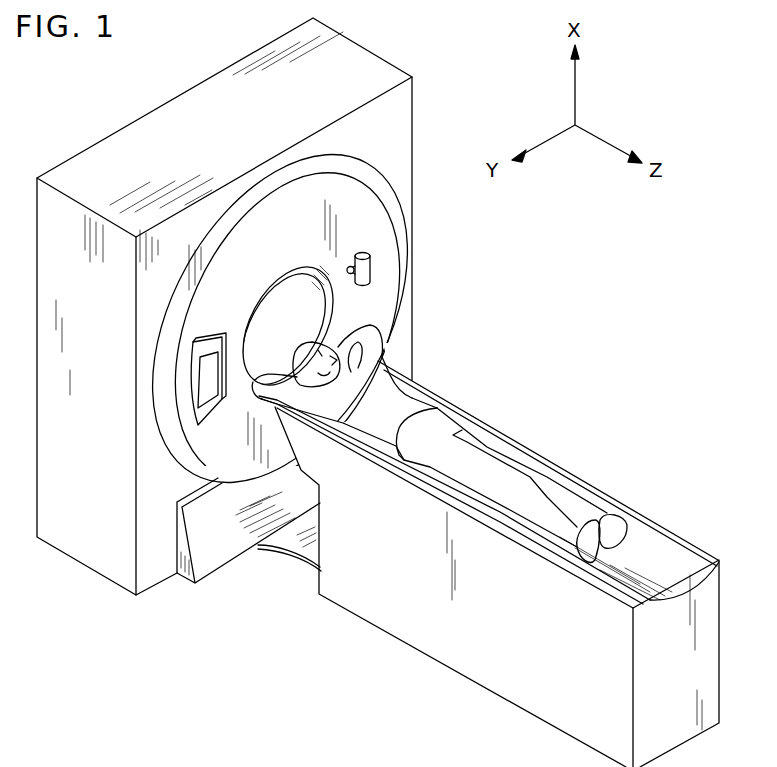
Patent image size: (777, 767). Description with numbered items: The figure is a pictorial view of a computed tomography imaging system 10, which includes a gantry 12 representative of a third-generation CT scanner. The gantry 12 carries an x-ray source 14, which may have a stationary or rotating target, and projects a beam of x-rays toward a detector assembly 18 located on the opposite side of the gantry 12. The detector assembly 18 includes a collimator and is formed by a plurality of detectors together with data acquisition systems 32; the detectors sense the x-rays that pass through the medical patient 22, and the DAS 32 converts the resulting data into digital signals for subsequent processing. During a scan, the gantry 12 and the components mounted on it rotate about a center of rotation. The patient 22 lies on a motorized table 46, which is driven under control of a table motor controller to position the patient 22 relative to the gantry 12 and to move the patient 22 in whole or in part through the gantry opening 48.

The computed tomography (CT) imaging system 10 is at (550, 260).
The gantry 12 is at (385, 233).
The x-ray source 14 is at (372, 268).
The detector assembly 18 is at (212, 404).
The medical patient 22 is at (411, 402).
The data acquisition systems (DAS) 32 is at (210, 352).
The motorized table 46 is at (537, 697).
The gantry opening 48 is at (285, 302).